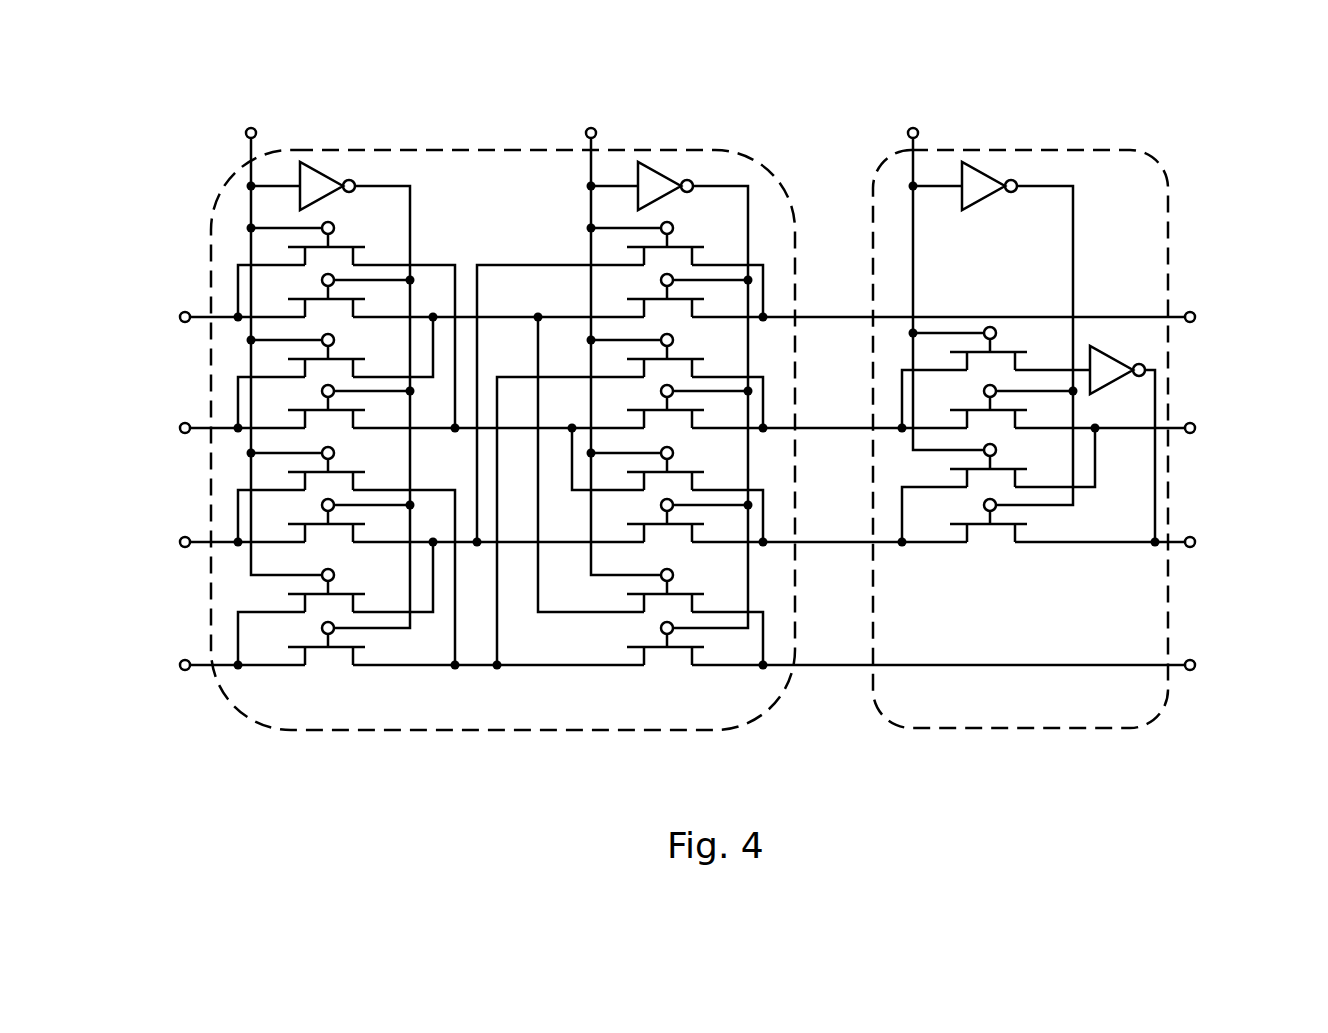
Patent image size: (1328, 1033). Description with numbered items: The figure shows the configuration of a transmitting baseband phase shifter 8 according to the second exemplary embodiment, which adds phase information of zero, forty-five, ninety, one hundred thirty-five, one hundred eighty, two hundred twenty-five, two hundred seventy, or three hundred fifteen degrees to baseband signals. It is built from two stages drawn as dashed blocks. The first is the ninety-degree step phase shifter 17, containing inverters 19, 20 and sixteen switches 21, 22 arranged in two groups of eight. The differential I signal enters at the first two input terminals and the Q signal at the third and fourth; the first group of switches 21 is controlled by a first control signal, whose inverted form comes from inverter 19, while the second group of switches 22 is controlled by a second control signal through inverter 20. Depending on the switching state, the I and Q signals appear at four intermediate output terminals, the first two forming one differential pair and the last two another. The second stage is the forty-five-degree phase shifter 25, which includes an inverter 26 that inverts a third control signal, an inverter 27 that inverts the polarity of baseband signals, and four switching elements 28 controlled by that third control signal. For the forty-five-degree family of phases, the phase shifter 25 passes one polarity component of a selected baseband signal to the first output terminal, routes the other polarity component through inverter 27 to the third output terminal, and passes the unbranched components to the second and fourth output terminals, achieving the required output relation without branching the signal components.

The transmitting baseband phase shifter 8 is at (740, 62).
The 90° step phase shifter 17 is at (215, 212).
The inverter 19 is at (317, 167).
The inverter 20 is at (660, 168).
The switches 21-1 to 21-8 21 is at (315, 652).
The switches 22-1 to 22-8 22 is at (655, 648).
The 45° phase shifter 25 is at (1170, 212).
The inverter 26 is at (975, 163).
The inverter 27 is at (1113, 357).
The switching elements 28-1 to 28-4 28 is at (985, 527).